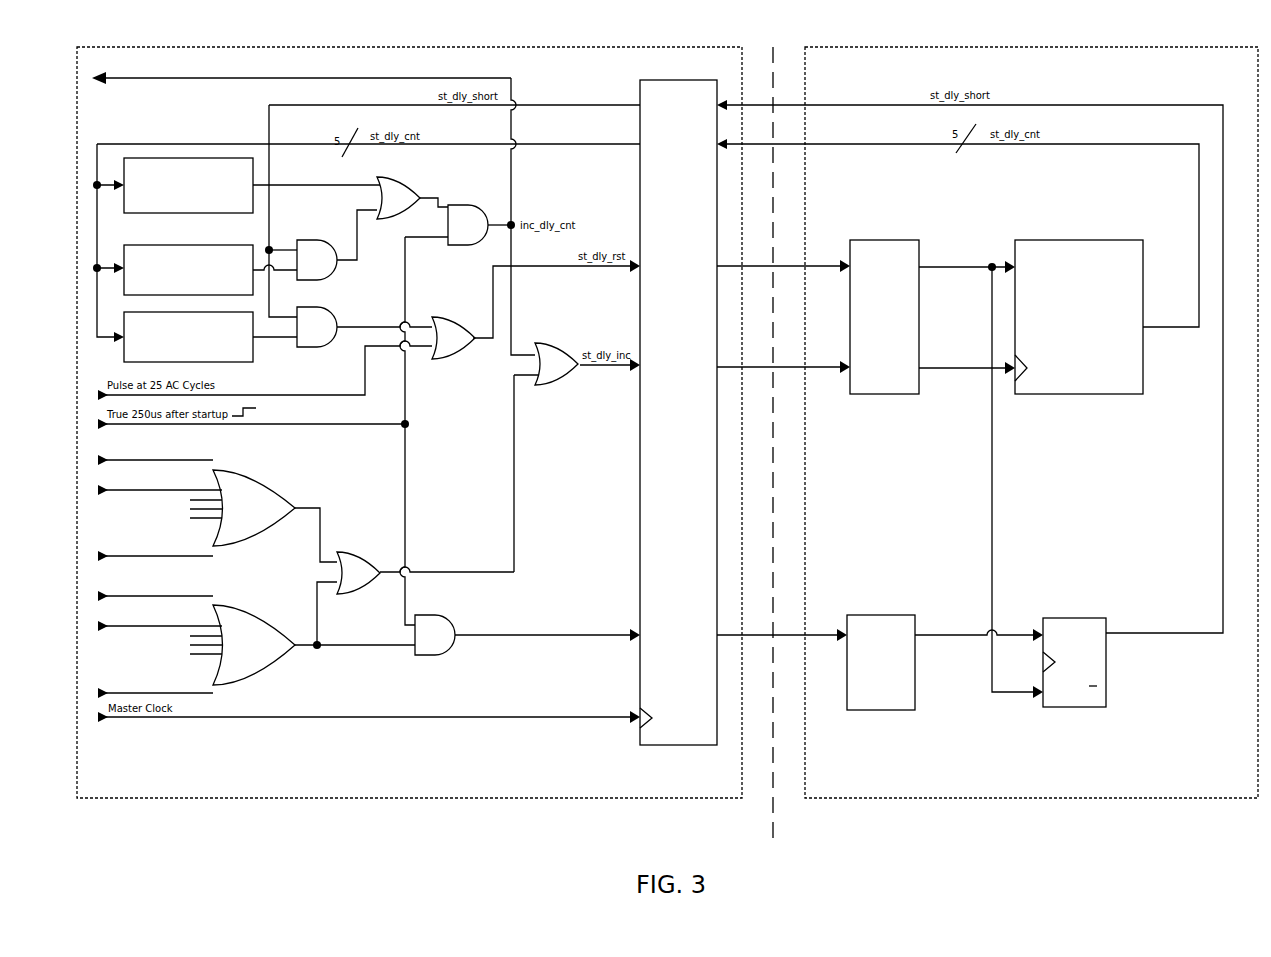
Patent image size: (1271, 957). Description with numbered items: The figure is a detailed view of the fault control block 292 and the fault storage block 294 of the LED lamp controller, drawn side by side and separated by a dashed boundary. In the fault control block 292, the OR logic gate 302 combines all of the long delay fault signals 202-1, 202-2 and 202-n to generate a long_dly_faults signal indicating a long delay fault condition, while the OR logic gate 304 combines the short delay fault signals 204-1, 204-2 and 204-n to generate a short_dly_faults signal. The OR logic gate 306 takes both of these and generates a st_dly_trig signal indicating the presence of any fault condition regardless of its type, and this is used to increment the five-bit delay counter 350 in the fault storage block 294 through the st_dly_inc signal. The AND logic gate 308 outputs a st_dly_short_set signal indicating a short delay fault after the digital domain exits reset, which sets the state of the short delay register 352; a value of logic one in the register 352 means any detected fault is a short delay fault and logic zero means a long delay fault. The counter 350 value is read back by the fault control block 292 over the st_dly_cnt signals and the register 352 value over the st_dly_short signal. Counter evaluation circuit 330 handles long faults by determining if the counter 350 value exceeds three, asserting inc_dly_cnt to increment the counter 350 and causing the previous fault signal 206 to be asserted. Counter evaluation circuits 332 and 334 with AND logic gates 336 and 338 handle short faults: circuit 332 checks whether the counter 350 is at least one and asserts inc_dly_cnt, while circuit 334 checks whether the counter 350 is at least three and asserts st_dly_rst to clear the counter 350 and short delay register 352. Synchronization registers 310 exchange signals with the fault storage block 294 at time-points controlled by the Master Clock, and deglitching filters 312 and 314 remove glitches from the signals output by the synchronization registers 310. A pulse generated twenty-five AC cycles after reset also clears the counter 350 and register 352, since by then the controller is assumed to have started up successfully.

The previous fault signal 206 is at (313, 208).
The fault control block 292 is at (409, 441).
The fault storage block 294 is at (1031, 443).
The counter evaluation circuit 330 is at (124, 210).
The counter evaluation circuit 332 is at (124, 291).
The counter evaluation circuit 334 is at (124, 360).
The AND logic gate 336 is at (315, 245).
The AND logic gate 338 is at (342, 327).
The OR logic gate 302 is at (282, 510).
The OR logic gate 304 is at (302, 633).
The OR logic gate 306 is at (425, 573).
The AND logic gate 308 is at (527, 635).
The synchronization registers 310 is at (678, 412).
The deglitching filter 312 is at (932, 317).
The deglitching filter 314 is at (945, 662).
The delay counter 350 is at (1079, 347).
The short delay register 352 is at (1110, 699).
The long delay fault signal 202-1 is at (100, 453).
The long delay fault signal 202-2 is at (100, 482).
The long delay fault signal 202-n is at (100, 550).
The short delay fault signal 204-1 is at (100, 590).
The short delay fault signal 204-2 is at (100, 619).
The short delay fault signal 204-n is at (100, 687).